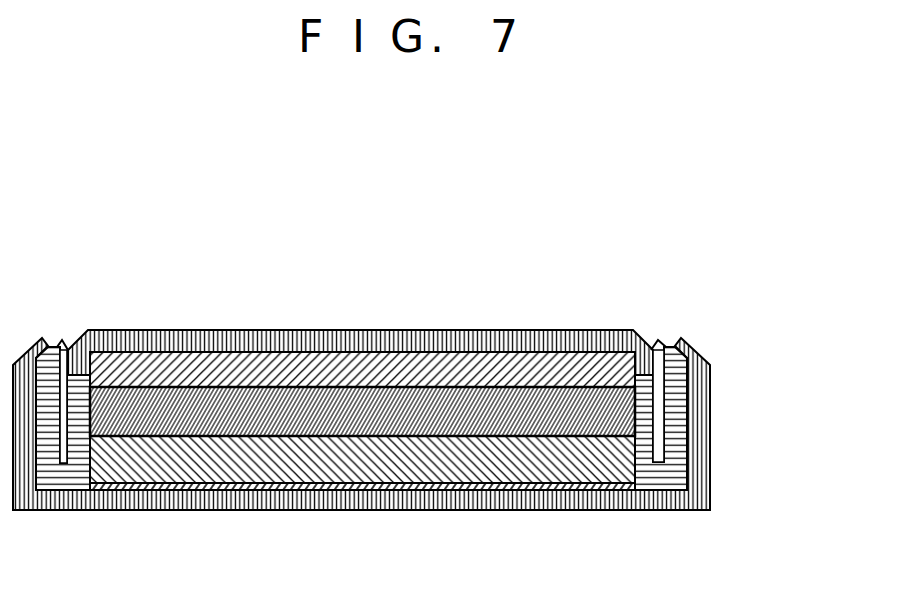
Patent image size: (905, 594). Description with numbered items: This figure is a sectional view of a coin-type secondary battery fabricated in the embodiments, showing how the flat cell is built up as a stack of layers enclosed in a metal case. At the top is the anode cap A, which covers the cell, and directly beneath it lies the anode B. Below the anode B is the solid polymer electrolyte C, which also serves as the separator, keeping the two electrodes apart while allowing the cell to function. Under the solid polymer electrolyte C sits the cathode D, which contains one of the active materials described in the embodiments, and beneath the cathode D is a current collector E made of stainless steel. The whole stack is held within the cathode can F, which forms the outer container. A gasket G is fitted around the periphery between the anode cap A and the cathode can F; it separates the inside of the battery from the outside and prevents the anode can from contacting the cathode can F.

The anode cap A is at (298, 342).
The anode B is at (328, 362).
The solid polymer electrolyte C is at (323, 415).
The cathode D is at (343, 477).
The current collector E is at (460, 483).
The cathode can F is at (683, 345).
The gasket G is at (700, 363).